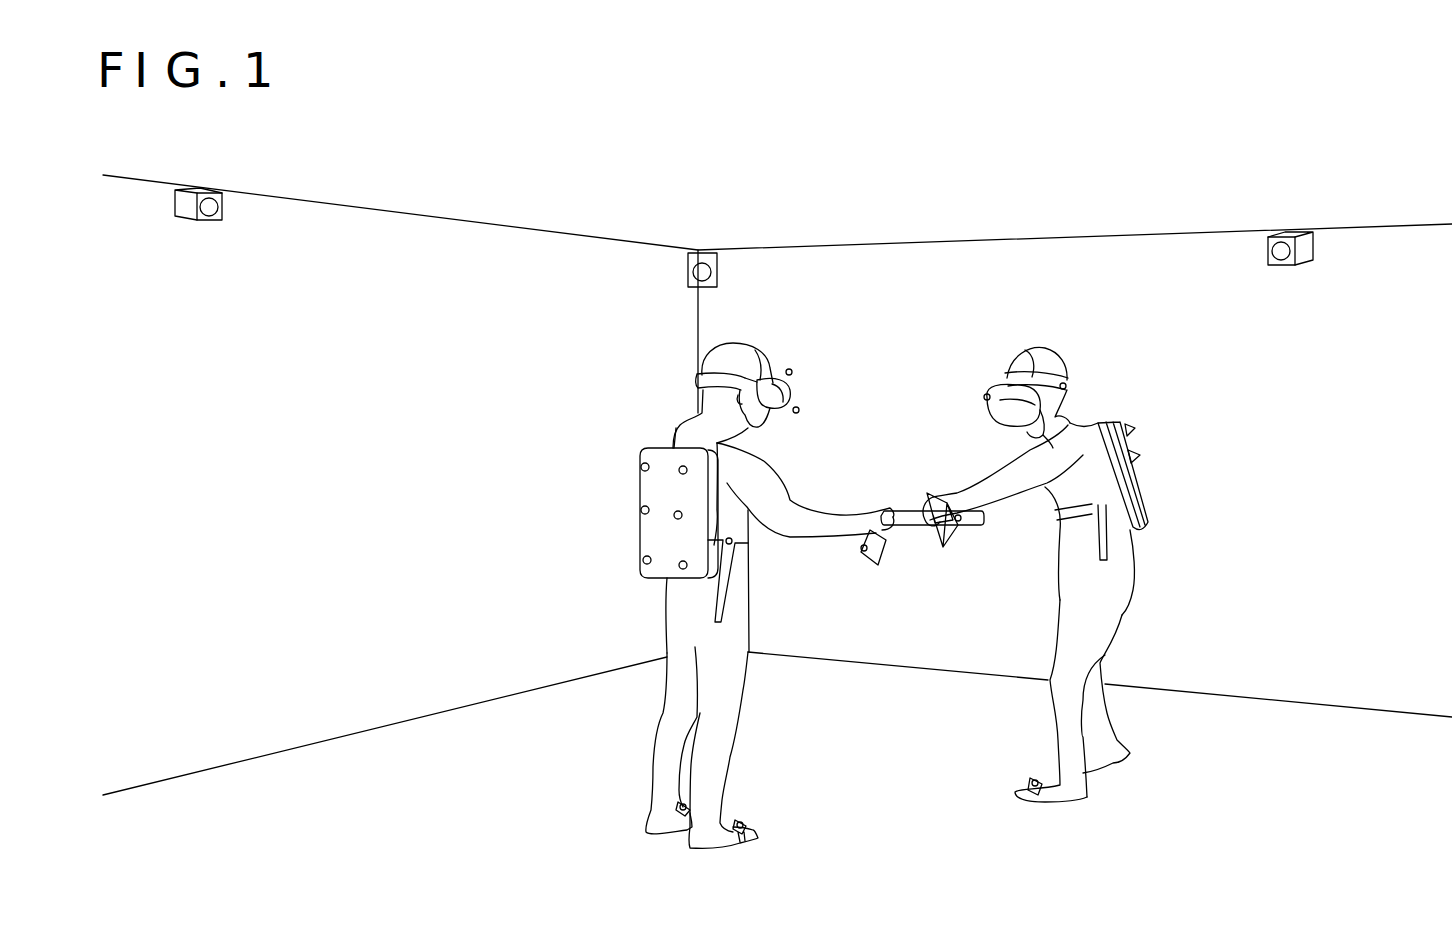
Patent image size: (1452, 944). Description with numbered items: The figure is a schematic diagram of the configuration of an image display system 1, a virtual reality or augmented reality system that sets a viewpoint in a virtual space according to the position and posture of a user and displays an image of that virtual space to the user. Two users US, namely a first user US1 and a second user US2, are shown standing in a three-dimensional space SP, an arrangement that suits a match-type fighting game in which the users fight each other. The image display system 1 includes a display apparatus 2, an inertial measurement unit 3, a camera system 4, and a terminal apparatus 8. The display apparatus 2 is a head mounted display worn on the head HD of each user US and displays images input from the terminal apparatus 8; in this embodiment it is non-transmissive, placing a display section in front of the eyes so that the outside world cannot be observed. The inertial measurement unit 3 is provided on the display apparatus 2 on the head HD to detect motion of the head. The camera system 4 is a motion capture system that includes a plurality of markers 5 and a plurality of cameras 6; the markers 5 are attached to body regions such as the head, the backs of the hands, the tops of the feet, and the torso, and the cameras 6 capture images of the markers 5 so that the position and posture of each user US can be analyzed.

The image display system 1 is at (1327, 182).
The display apparatus 2 is at (790, 410).
The inertial measurement unit 3 is at (773, 380).
The camera system 4 is at (799, 478).
The markers 5 is at (678, 515).
The cameras 6 is at (198, 192).
The terminal apparatus 8 is at (660, 525).
The head HD is at (883, 375).
The three-dimensional space SP is at (447, 247).
The user US is at (950, 619).
The first user US1 is at (735, 610).
The second user US2 is at (1110, 585).